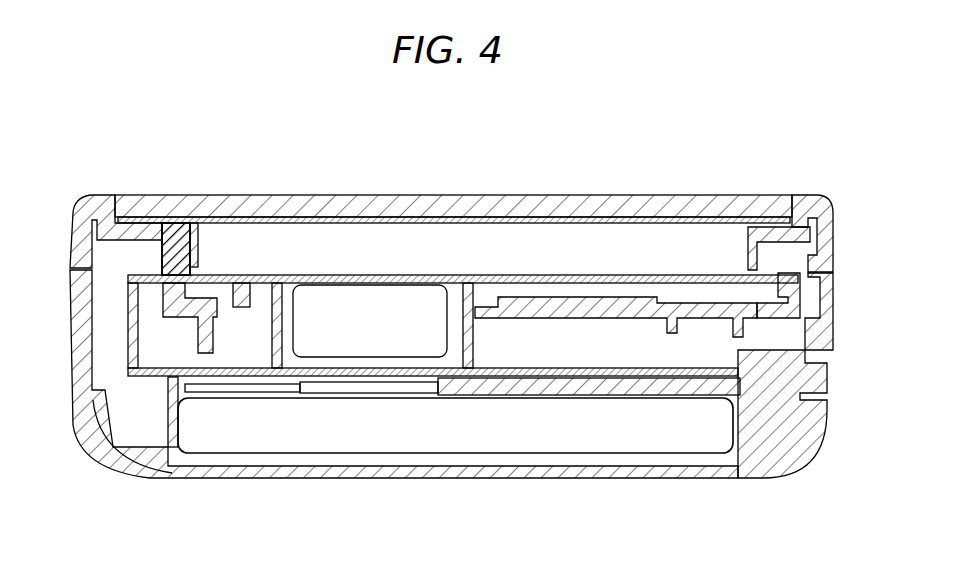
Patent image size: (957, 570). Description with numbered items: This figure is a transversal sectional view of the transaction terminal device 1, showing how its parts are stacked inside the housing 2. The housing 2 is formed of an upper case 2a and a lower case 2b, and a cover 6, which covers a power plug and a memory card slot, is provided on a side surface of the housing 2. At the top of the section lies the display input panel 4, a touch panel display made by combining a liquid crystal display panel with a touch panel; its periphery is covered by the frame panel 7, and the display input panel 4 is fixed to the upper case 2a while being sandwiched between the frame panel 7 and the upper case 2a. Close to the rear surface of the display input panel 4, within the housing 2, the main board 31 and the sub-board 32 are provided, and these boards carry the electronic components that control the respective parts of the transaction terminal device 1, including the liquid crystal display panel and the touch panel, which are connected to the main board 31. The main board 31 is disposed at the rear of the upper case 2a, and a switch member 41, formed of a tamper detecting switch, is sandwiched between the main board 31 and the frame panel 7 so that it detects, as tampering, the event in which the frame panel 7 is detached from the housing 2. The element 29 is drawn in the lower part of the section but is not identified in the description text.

The transaction terminal device 1 is at (664, 157).
The housing 2 is at (138, 152).
The upper case 2a is at (77, 212).
The lower case 2b is at (68, 290).
The display input panel 4 is at (276, 215).
The cover 6 is at (832, 360).
The frame panel 7 is at (363, 195).
The battery 29 is at (527, 455).
The main board 31 is at (427, 275).
The sub-board 32 is at (605, 380).
The switch member 41 is at (195, 248).